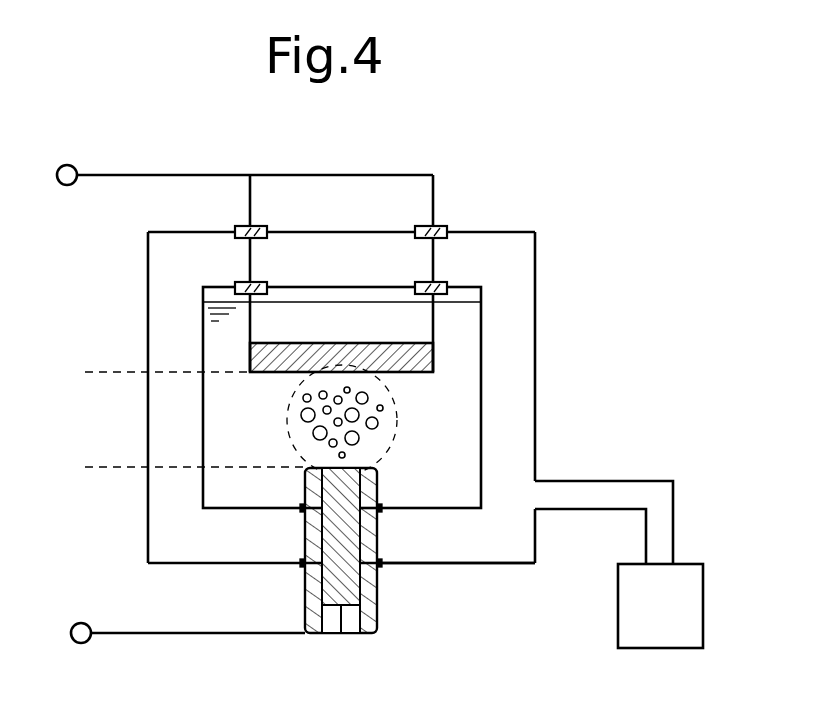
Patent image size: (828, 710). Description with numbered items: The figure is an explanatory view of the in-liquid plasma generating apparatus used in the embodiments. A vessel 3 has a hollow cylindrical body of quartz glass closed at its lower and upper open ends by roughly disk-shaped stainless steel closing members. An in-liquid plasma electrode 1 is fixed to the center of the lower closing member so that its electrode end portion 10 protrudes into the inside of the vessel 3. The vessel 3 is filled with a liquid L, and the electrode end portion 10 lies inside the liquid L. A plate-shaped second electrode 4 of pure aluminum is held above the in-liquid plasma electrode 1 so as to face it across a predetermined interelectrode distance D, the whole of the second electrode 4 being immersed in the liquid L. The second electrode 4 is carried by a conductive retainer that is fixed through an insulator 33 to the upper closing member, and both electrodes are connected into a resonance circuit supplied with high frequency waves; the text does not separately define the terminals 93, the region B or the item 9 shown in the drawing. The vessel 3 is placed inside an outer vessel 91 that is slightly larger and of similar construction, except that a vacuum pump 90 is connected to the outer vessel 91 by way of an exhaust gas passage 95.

The in-liquid plasma electrode 1 is at (465, 535).
The electrode end portion 10 is at (378, 488).
The vessel 3 is at (482, 337).
The insulator 33 is at (258, 288).
The second electrode 4 is at (410, 357).
The gas supply unit 9 is at (635, 529).
The vacuum pump 90 is at (647, 619).
The outer vessel 91 is at (538, 537).
The feedthrough terminal 93 is at (258, 232).
The exhaust gas passage 95 is at (660, 536).
The bubbles B is at (297, 440).
The interelectrode distance D is at (98, 374).
The liquid L is at (216, 362).